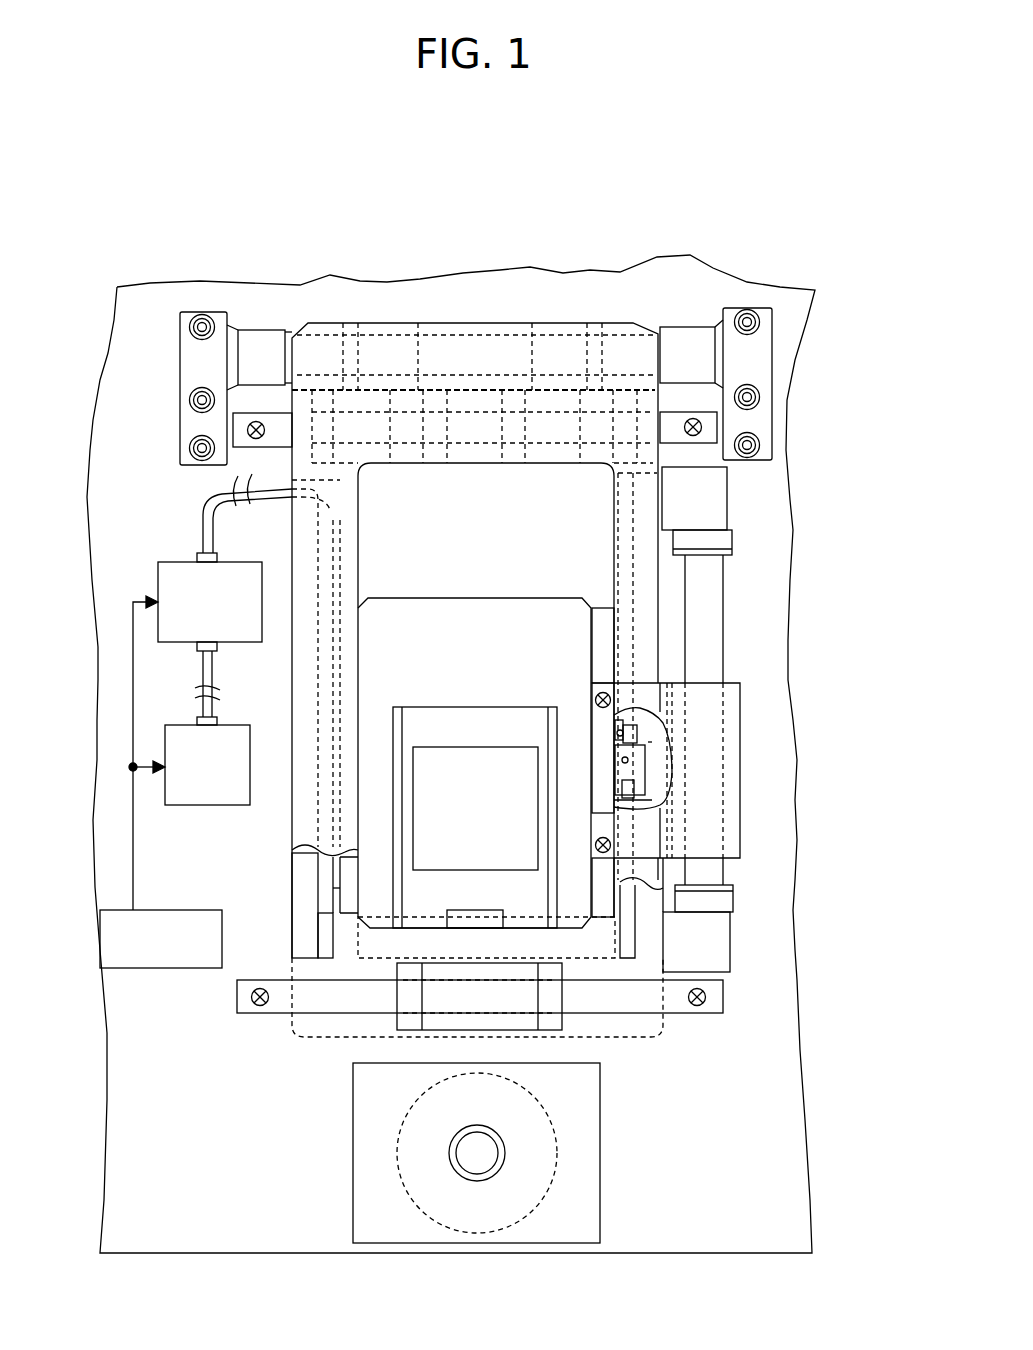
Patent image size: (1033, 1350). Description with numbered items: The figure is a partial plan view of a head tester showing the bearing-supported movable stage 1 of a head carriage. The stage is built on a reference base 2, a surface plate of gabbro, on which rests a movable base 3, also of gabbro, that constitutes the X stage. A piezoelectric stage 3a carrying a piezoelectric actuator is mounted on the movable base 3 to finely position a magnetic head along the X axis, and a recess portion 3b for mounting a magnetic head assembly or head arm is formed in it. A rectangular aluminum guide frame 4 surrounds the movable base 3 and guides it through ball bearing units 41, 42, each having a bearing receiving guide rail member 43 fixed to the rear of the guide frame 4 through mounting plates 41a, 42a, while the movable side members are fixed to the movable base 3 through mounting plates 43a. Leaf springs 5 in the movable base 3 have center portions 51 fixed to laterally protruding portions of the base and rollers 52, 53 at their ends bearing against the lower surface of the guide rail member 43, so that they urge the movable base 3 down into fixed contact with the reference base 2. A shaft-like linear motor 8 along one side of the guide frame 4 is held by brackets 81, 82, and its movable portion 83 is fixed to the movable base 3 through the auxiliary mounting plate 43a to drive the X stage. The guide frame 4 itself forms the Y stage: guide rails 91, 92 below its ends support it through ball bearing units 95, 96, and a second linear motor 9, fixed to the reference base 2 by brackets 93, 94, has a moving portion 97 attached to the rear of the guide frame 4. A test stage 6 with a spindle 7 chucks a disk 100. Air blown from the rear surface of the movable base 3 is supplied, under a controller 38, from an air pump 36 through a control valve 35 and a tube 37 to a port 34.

The bearing-supported movable stage 1 is at (822, 519).
The reference base 2 is at (785, 600).
The movable base 3 is at (490, 606).
The piezoelectric stage 3a is at (518, 713).
The recess portion 3b is at (473, 917).
The guide frame 4 is at (577, 322).
The leaf springs 5 is at (645, 780).
The test stage 6 is at (600, 1122).
The spindle 7 is at (477, 1181).
The linear motor 8 is at (713, 668).
The linear motor 9 is at (686, 318).
The port 34 is at (340, 747).
The control valve 35 is at (178, 645).
The air pump 36 is at (178, 806).
The tube 37 is at (203, 530).
The controller 38 is at (137, 968).
The ball bearing unit 41 is at (648, 902).
The mounting plate 41a is at (650, 577).
The ball bearing unit 42 is at (305, 887).
The mounting plate 42a is at (300, 662).
The bearing receiving guide rail member 43 is at (632, 650).
The mounting plate 43a is at (602, 615).
The center portion 51 is at (652, 745).
The roller 52 is at (652, 800).
The roller 53 is at (647, 728).
The bracket 81 is at (710, 493).
The bracket 82 is at (718, 928).
The movable portion 83 is at (735, 840).
The guide rail 91 is at (712, 428).
The guide rail 92 is at (648, 1000).
The bracket 93 is at (758, 348).
The bracket 94 is at (188, 355).
The ball bearing unit 95 is at (363, 330).
The ball bearing unit 96 is at (530, 1022).
The moving portion 97 is at (418, 330).
The disk 100 is at (547, 1160).